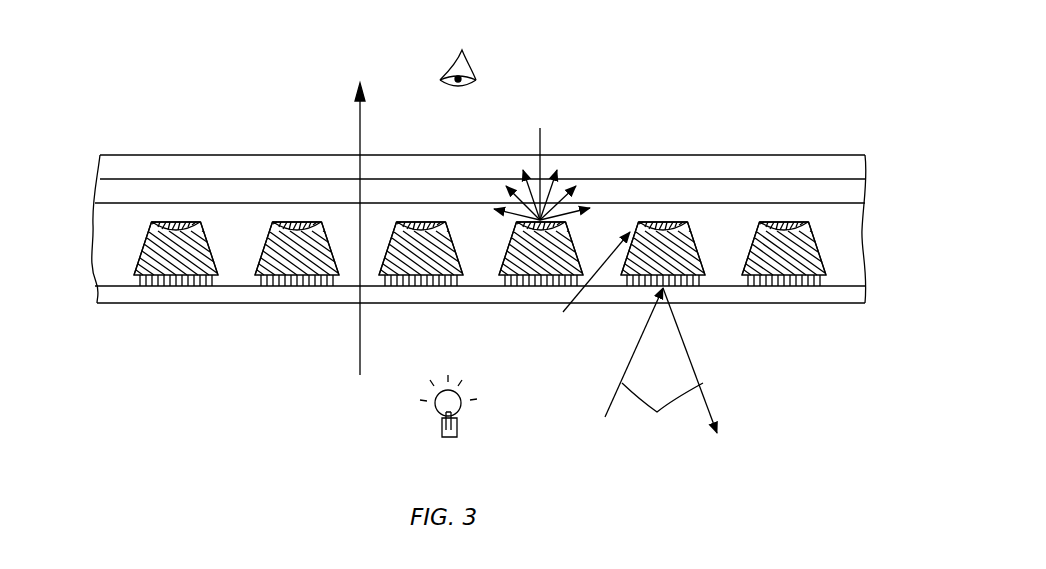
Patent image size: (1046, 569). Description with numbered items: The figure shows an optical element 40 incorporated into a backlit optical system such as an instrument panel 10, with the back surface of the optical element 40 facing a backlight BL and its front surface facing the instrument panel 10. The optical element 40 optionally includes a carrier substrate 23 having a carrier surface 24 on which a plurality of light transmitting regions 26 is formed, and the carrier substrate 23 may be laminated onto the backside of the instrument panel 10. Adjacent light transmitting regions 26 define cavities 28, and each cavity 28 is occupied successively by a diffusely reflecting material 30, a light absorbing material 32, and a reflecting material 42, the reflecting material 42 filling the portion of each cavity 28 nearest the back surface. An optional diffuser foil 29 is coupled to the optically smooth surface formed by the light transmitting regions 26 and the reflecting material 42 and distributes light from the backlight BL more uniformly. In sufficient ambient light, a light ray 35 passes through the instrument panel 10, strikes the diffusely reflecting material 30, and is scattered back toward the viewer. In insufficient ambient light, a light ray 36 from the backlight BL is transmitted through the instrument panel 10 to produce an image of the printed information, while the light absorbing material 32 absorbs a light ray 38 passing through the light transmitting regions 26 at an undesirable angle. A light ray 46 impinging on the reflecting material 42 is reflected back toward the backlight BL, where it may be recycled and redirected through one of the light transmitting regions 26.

The instrument panel 10 is at (507, 162).
The carrier substrate 23 is at (124, 182).
The carrier surface 24 is at (119, 200).
The light transmitting regions 26 is at (133, 256).
The cavities 28 is at (176, 215).
The diffuser foil 29 is at (787, 294).
The diffusely reflecting material 30 is at (164, 221).
The light absorbing material 32 is at (271, 236).
The light ray 35 is at (541, 137).
The light ray 36 is at (362, 125).
The light ray 38 is at (583, 290).
The optical element 40 is at (122, 64).
The reflecting material 42 is at (175, 280).
The light ray 46 is at (661, 366).
The backlight BL is at (437, 413).